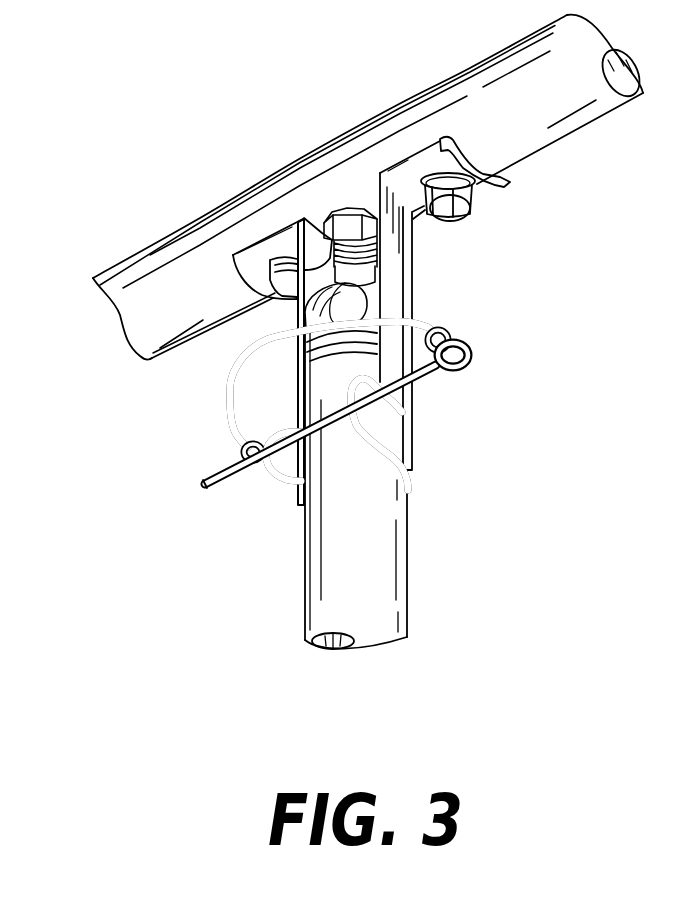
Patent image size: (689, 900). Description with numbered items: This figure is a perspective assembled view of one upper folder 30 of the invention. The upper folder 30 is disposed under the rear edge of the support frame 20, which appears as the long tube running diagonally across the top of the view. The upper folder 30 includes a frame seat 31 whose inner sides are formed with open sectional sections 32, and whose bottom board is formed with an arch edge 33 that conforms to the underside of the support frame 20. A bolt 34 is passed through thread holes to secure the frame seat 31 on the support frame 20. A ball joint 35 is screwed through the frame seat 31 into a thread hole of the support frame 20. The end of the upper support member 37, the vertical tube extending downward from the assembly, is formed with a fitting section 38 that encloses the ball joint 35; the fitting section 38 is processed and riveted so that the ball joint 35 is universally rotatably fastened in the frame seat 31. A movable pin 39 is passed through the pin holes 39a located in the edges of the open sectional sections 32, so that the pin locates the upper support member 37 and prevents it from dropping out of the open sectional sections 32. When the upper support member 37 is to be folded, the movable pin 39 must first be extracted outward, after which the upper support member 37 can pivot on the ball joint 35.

The support frame 20 is at (210, 230).
The upper folder 30 is at (160, 466).
The frame seat 31 is at (398, 295).
The open sectional sections 32 is at (317, 228).
The arch edge 33 is at (447, 157).
The bolt 34 is at (458, 221).
The ball joint 35 is at (300, 306).
The upper support member 37 is at (373, 567).
The fitting section 38 is at (410, 312).
The movable pin 39 is at (417, 374).
The pin holes 39a is at (418, 405).